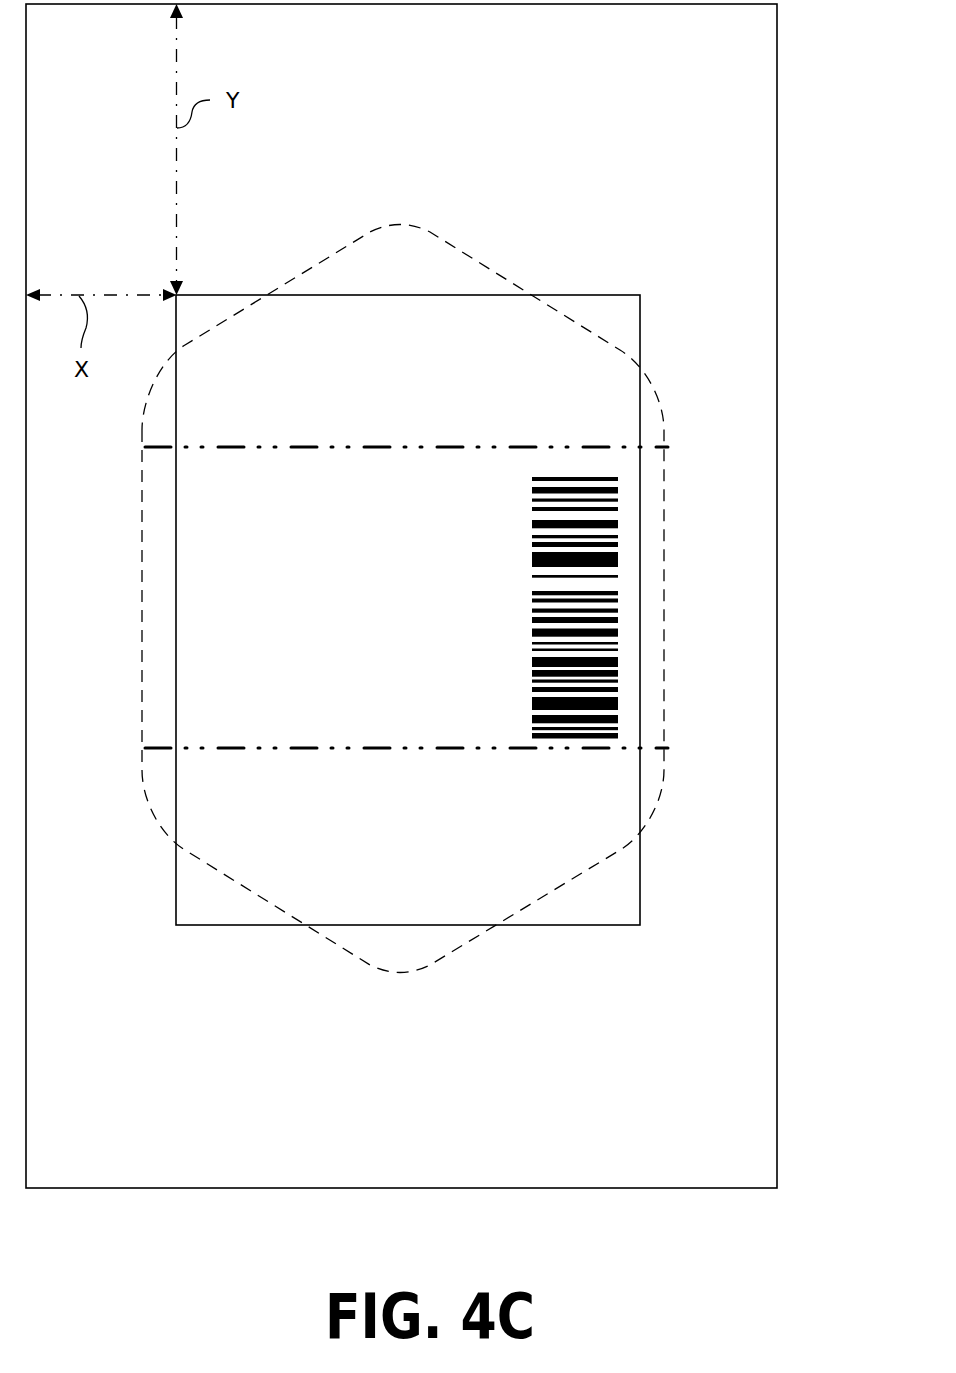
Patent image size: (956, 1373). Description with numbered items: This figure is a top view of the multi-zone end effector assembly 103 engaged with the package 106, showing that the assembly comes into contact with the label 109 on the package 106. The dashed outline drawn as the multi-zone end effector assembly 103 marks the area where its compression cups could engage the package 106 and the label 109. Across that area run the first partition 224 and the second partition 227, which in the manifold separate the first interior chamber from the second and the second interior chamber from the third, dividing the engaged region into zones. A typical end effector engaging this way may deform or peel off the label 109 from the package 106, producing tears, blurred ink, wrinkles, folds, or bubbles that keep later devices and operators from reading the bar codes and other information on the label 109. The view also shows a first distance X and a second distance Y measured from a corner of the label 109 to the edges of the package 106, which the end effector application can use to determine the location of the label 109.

The multi-zone end effector assembly 103 is at (458, 239).
The package 106 is at (777, 263).
The label 109 is at (620, 295).
The first partition 224 is at (452, 749).
The second partition 227 is at (470, 447).